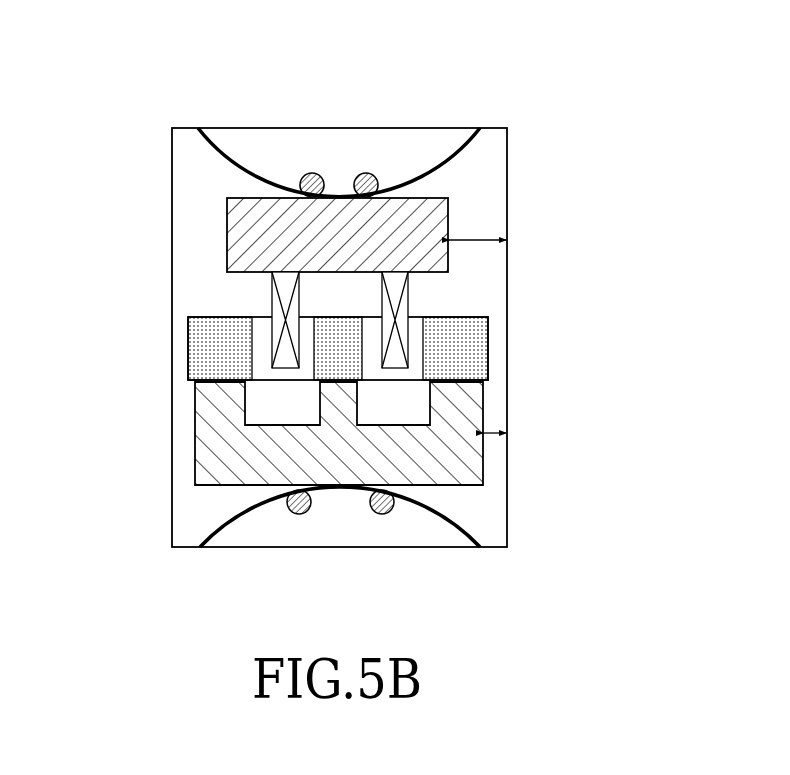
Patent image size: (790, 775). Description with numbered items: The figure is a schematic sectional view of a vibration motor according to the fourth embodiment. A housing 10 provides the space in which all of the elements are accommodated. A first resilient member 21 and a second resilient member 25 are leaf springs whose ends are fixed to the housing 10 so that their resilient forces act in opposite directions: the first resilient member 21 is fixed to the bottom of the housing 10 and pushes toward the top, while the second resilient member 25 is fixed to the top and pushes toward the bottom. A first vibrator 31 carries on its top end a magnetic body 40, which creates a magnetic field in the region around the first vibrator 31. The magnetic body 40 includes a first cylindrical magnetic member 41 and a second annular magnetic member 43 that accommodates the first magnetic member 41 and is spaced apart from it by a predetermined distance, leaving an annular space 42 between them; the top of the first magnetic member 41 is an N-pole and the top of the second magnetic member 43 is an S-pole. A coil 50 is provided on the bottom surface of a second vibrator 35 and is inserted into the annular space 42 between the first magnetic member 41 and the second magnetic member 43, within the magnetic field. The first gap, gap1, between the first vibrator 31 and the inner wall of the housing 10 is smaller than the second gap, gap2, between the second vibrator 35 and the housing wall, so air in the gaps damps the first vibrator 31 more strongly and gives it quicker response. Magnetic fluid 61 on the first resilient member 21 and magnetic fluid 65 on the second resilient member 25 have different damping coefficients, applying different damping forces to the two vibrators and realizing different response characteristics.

The housing 10 is at (171, 176).
The first resilient member 21 is at (458, 527).
The second resilient member 25 is at (437, 162).
The first vibrator 31 is at (195, 437).
The second vibrator 35 is at (227, 240).
The magnetic body 40 is at (271, 373).
The first magnetic member 41 is at (325, 366).
The slot 42 is at (261, 334).
The second magnetic member 43 is at (200, 332).
The coil 50 is at (408, 292).
The magnetic fluid 61 is at (382, 514).
The magnetic fluid 65 is at (312, 173).
The first gap gap1 is at (495, 432).
The second gap gap2 is at (478, 240).